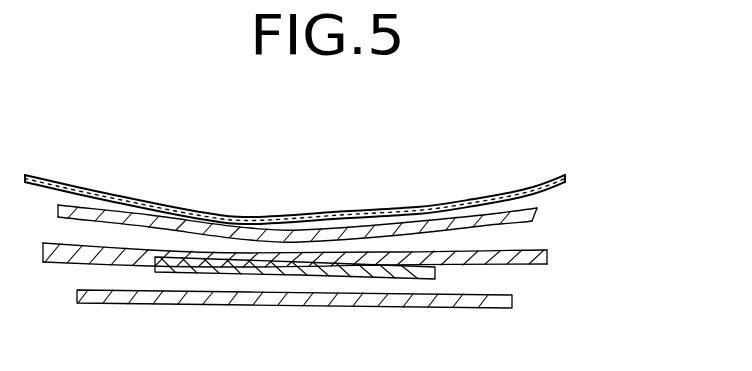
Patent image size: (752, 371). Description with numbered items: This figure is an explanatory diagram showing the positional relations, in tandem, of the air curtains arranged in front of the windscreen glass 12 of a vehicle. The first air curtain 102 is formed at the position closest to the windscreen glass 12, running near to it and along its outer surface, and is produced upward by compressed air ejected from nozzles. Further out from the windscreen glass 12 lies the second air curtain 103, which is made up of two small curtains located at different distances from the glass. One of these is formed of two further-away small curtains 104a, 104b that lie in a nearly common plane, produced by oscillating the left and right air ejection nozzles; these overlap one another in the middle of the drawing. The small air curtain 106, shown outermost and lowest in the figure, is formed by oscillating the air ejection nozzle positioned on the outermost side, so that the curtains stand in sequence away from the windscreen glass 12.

The windscreen glass 12 is at (509, 194).
The first air curtain 102 is at (516, 221).
The second air curtain 103 is at (364, 284).
The small curtain 104a is at (62, 263).
The small curtain 104b is at (536, 266).
The small air curtain 106 is at (368, 307).